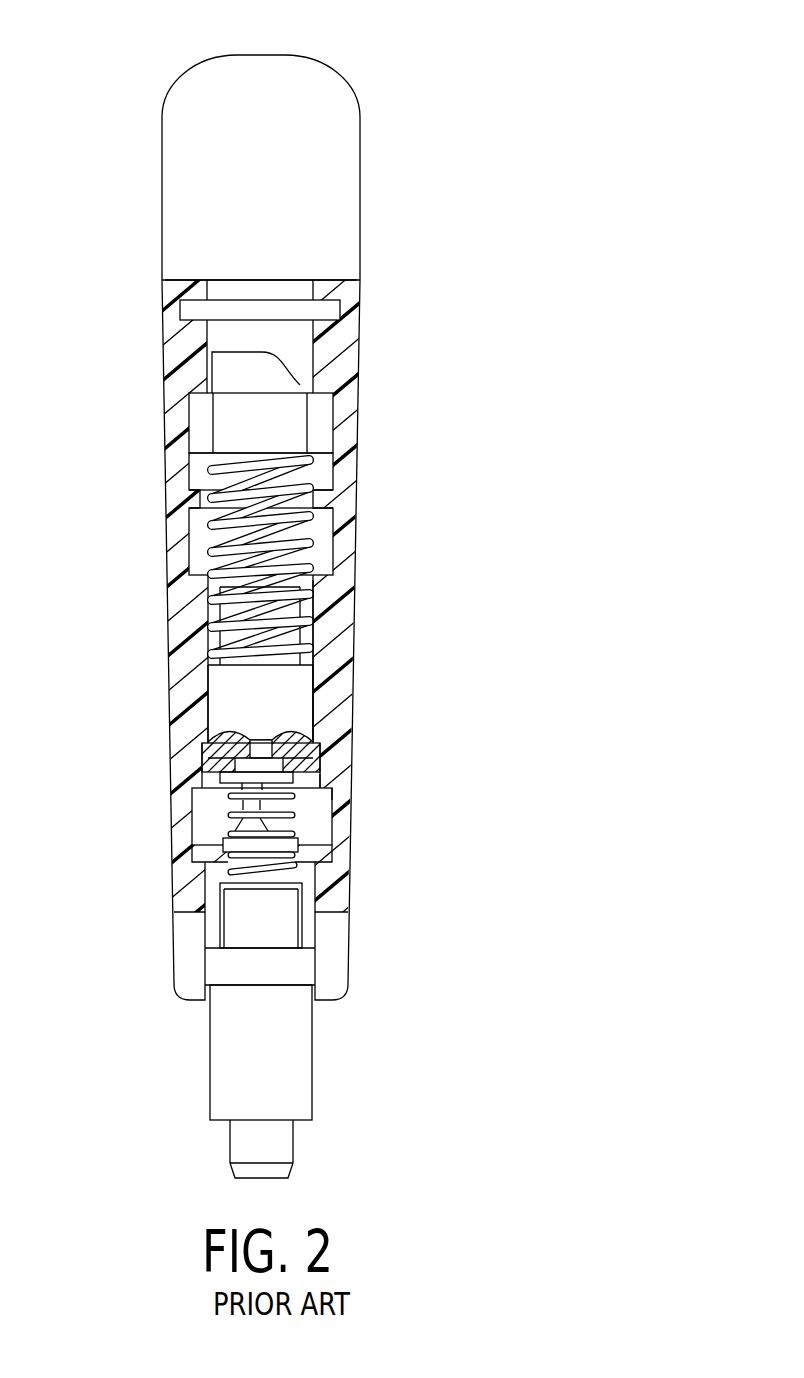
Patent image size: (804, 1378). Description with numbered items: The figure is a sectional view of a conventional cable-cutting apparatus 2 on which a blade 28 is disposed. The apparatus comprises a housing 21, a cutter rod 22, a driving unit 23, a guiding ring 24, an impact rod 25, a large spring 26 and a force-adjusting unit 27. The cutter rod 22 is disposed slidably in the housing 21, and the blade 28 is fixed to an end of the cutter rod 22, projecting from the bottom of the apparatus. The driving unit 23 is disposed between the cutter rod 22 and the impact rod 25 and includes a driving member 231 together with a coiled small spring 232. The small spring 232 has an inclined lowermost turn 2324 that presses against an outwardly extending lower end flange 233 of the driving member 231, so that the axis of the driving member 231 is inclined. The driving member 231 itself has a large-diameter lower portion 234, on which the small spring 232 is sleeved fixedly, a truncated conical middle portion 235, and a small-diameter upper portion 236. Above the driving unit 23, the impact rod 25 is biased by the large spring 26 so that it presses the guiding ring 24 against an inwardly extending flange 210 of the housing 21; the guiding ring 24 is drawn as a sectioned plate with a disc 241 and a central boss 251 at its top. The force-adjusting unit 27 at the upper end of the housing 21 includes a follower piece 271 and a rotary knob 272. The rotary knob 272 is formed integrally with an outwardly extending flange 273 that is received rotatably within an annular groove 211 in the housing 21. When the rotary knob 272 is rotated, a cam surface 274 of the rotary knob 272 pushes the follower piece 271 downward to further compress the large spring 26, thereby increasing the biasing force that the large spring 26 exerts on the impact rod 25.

The cable-cutting apparatus 2 is at (389, 120).
The housing 21 is at (353, 353).
The inwardly extending flange 210 is at (318, 748).
The annular groove 211 is at (195, 298).
The cutter rod 22 is at (293, 1050).
The driving unit 23 is at (333, 817).
The driving member 231 is at (273, 843).
The small spring 232 is at (330, 803).
The lower end flange 233 is at (222, 883).
The large-diameter lower portion 234 is at (240, 867).
The truncated conical middle portion 235 is at (240, 822).
The small-diameter upper portion 236 is at (240, 800).
The inclined lowermost turn 2324 is at (250, 880).
The guiding ring 24 is at (200, 763).
The seal disc 241 is at (210, 740).
The impact rod 25 is at (215, 690).
The boss 251 is at (261, 740).
The large spring 26 is at (305, 522).
The force-adjusting unit 27 is at (332, 434).
The follower piece 271 is at (203, 422).
The rotary knob 272 is at (315, 260).
The outwardly extending flange 273 is at (330, 306).
The cam surface 274 is at (292, 378).
The blade 28 is at (277, 1140).